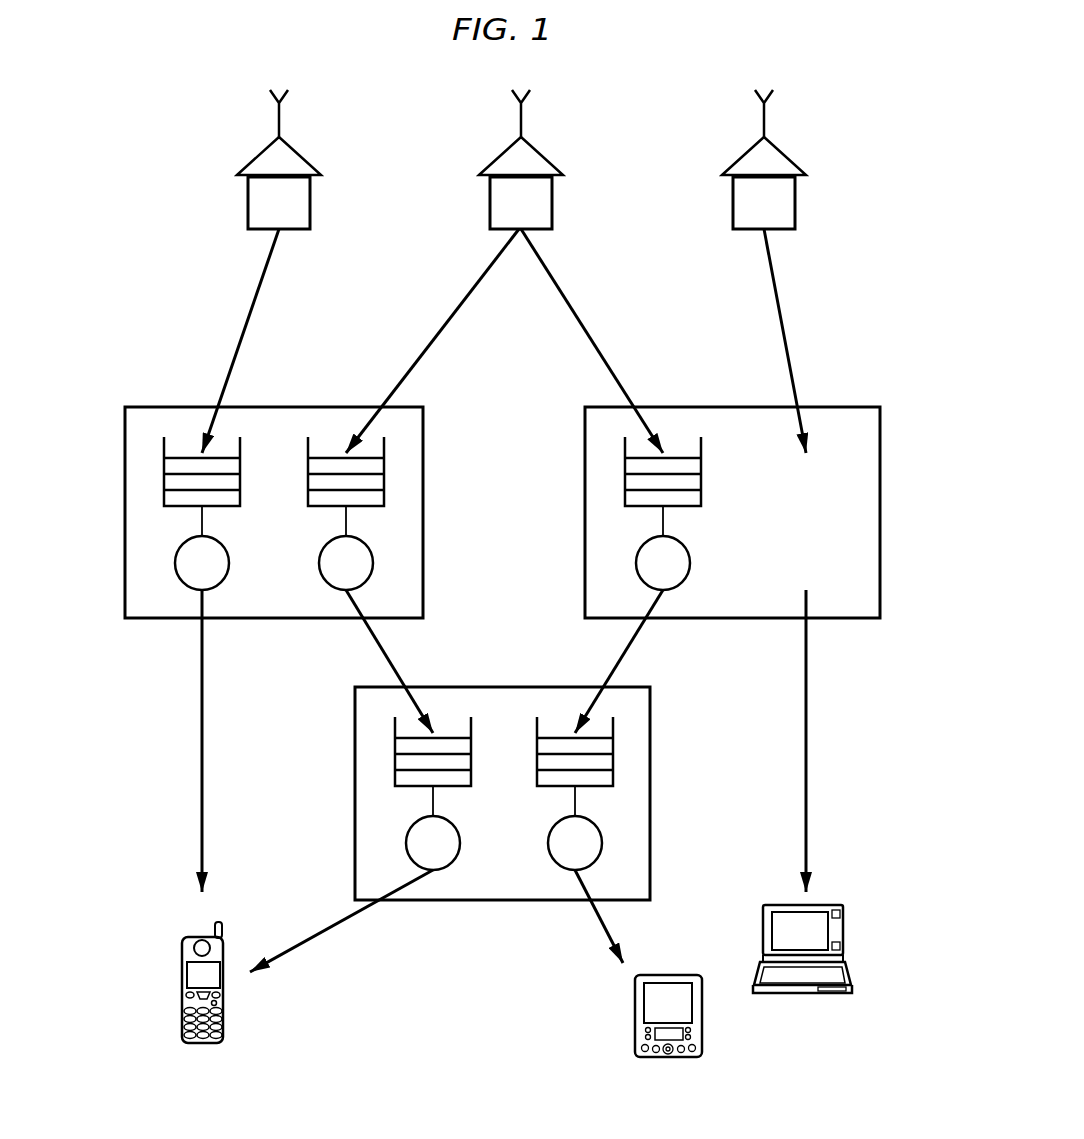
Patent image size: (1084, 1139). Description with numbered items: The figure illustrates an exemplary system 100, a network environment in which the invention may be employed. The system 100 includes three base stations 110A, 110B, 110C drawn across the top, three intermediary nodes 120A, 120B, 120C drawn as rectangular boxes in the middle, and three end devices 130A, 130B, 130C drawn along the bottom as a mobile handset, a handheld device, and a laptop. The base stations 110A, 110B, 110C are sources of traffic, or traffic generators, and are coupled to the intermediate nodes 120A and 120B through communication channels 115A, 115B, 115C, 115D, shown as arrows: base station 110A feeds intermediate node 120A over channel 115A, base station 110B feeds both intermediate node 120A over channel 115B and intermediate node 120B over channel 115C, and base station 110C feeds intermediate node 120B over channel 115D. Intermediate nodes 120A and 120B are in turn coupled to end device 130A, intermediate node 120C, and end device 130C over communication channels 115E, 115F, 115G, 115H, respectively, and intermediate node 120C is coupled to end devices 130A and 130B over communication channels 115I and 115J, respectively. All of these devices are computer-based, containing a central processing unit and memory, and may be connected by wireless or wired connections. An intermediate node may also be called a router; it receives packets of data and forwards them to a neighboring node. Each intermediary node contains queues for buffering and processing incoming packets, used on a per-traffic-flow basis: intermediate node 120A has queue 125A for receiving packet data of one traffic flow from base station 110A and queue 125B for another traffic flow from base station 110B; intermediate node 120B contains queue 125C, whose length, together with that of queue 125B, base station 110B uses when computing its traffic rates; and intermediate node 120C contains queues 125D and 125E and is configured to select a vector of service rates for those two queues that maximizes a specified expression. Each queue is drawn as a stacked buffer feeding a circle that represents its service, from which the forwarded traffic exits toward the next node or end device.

The system 100 is at (152, 107).
The base station 110A is at (279, 159).
The base station 110B is at (521, 159).
The base station 110C is at (764, 159).
The communication channel 115A is at (255, 302).
The communication channel 115B is at (462, 302).
The communication channel 115C is at (574, 313).
The communication channel 115D is at (778, 307).
The communication channel 115E is at (200, 722).
The communication channel 115F is at (392, 665).
The communication channel 115G is at (617, 665).
The communication channel 115H is at (808, 674).
The communication channel 115I is at (322, 935).
The communication channel 115J is at (596, 920).
The intermediate node 120A is at (140, 406).
The intermediate node 120B is at (880, 425).
The intermediate node 120C is at (650, 726).
The queue 125A is at (164, 493).
The queue 125B is at (384, 460).
The queue 125C is at (625, 465).
The queue 125D is at (395, 745).
The queue 125E is at (613, 764).
The end device 130A is at (182, 965).
The end device 130B is at (685, 975).
The end device 130C is at (843, 937).